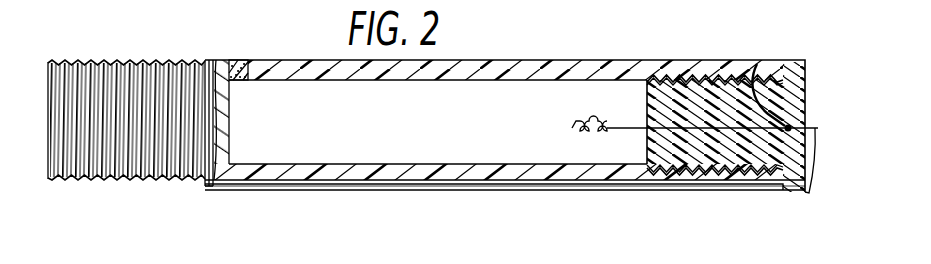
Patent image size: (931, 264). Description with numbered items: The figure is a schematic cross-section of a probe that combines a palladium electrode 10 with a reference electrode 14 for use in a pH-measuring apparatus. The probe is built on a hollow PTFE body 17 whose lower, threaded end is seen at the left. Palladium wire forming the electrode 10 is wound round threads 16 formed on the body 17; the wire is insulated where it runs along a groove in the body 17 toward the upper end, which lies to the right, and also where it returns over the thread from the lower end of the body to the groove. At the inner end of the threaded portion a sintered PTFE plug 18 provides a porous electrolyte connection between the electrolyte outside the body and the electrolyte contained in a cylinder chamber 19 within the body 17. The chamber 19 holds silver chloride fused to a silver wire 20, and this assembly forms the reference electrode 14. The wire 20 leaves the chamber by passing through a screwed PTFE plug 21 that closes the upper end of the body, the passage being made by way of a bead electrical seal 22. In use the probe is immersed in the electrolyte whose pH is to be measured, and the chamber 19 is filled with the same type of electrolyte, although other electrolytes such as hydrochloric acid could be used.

The palladium electrode 10 is at (55, 182).
The reference electrode 14 is at (571, 124).
The threads 16 is at (120, 182).
The hollow PTFE body 17 is at (522, 60).
The sintered PTFE plug 18 is at (233, 60).
The cylinder chamber 19 is at (303, 142).
The silver wire 20 is at (810, 196).
The screwed PTFE plug 21 is at (797, 196).
The bead electrical seal 22 is at (764, 63).